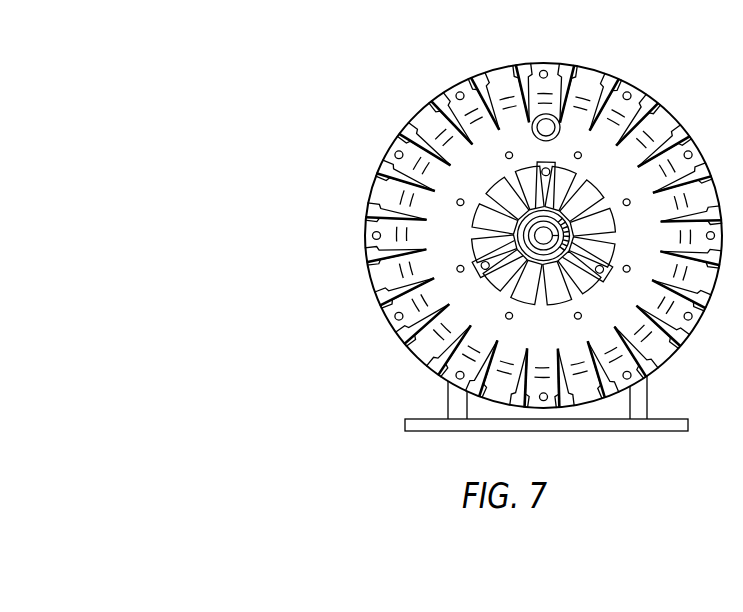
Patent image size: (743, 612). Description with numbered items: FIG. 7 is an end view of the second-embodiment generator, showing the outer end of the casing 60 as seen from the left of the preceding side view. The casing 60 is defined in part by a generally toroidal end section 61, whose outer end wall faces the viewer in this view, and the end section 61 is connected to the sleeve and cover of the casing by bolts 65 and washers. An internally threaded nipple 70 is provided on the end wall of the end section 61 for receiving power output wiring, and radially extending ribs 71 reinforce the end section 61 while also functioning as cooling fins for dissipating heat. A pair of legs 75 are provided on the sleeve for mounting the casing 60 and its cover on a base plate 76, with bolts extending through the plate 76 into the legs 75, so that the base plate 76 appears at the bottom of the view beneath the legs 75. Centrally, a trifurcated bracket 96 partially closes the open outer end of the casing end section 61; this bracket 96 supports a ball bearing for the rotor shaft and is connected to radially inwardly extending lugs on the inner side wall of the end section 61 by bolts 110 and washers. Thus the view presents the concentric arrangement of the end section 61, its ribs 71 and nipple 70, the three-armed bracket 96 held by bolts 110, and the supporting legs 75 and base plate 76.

The casing 60 is at (704, 337).
The end section 61 is at (722, 288).
The bolts 65 is at (395, 150).
The nipple 70 is at (586, 72).
The ribs 71 is at (688, 130).
The legs 75 is at (636, 404).
The base plate 76 is at (689, 425).
The trifurcated bracket 96 is at (549, 185).
The bolts 110 is at (549, 172).